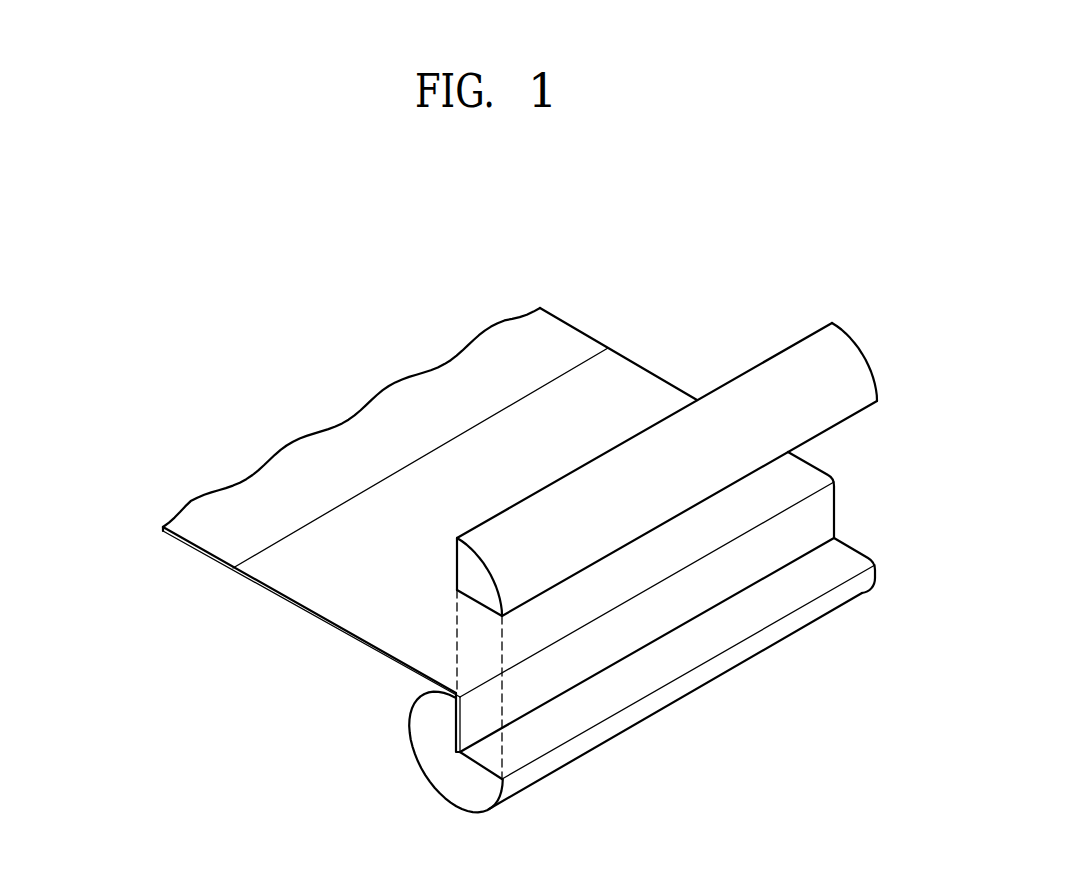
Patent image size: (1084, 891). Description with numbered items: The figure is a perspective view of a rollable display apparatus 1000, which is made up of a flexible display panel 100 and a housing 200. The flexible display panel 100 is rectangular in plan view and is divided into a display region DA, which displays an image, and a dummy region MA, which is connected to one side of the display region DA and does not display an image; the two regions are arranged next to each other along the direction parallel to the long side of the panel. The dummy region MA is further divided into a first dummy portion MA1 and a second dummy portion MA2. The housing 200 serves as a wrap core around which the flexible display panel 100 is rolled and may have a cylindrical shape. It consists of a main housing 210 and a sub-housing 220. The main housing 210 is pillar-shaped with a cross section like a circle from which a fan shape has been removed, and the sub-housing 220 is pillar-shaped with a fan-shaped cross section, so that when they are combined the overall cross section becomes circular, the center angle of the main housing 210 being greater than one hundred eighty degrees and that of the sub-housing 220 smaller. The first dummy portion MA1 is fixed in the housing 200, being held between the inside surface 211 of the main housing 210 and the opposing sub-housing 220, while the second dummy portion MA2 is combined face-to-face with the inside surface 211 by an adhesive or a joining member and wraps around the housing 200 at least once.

The rollable display apparatus 1000 is at (782, 317).
The flexible display panel 100 is at (303, 755).
The display region DA is at (200, 546).
The dummy region MA is at (377, 751).
The first dummy portion MA1 is at (457, 714).
The second dummy portion MA2 is at (397, 667).
The housing 200 is at (680, 778).
The main housing 210 is at (607, 728).
The inside surface 211 is at (423, 765).
The sub-housing 220 is at (572, 535).